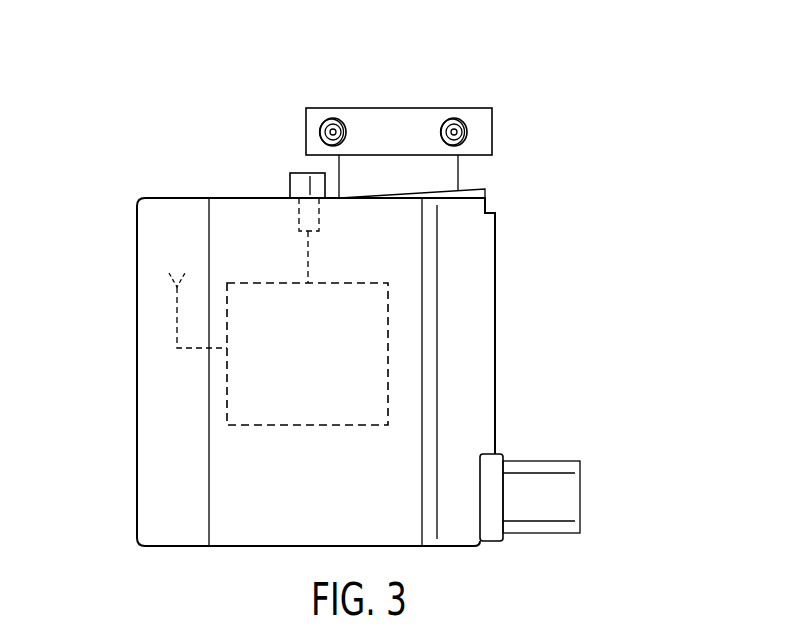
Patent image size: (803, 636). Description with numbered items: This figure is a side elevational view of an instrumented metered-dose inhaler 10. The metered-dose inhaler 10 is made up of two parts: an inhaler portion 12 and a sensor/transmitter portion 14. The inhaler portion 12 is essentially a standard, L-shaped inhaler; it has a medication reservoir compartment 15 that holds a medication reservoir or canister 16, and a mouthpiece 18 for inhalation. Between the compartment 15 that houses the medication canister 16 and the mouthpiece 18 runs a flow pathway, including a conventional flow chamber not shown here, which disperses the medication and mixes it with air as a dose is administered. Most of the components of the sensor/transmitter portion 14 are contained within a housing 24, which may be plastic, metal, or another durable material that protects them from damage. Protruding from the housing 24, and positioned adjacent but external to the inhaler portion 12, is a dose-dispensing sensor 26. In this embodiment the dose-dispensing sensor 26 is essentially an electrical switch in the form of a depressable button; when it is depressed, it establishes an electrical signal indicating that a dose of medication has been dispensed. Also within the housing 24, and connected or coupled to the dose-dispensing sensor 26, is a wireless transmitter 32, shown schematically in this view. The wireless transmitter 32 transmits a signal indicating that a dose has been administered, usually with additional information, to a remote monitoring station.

The metered-dose inhaler 10 is at (531, 78).
The inhaler portion 12 is at (490, 191).
The sensor/transmitter portion 14 is at (194, 195).
The medication reservoir compartment 15 is at (414, 193).
The medication canister 16 is at (448, 172).
The mouthpiece 18 is at (539, 463).
The housing 24 is at (151, 244).
The dose-dispensing sensor 26 is at (300, 182).
The wireless transmitter 32 is at (266, 281).